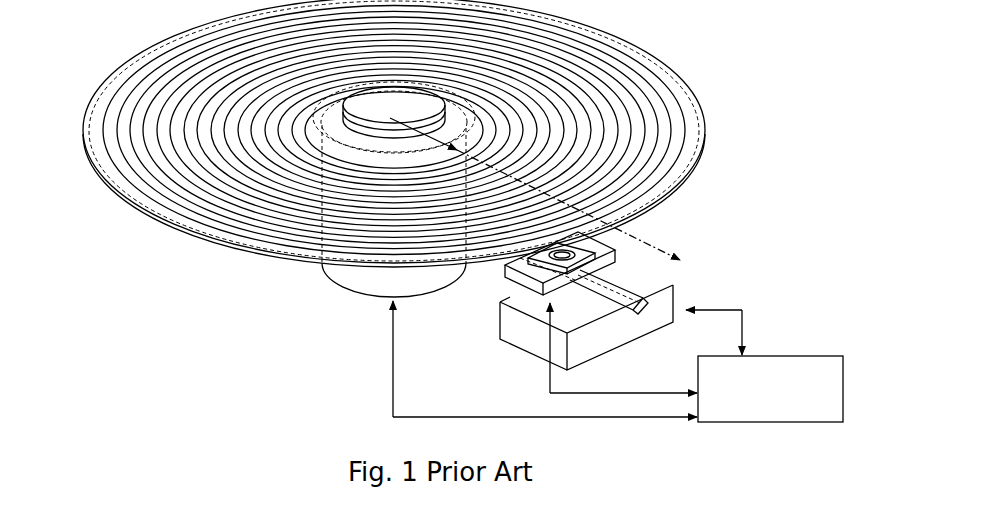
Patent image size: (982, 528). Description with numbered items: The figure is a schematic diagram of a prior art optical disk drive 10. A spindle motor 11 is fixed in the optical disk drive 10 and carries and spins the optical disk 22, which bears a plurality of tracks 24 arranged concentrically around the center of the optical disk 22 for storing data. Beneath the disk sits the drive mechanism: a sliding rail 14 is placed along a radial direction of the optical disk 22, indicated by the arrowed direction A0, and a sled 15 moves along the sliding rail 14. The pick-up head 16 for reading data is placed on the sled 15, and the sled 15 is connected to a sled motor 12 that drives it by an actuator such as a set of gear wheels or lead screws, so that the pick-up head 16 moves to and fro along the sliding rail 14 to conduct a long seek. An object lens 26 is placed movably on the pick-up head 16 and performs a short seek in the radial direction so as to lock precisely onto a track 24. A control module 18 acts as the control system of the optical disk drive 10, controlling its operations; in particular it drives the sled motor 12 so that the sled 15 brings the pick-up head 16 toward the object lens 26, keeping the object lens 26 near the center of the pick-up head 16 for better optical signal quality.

The optical disk drive 10 is at (778, 211).
The spindle motor 11 is at (333, 278).
The sled motor 12 is at (672, 302).
The sliding rail 14 is at (630, 306).
The sled 15 is at (610, 262).
The pick-up head 16 is at (590, 237).
The control module 18 is at (847, 363).
The optical disk 22 is at (97, 137).
The tracks 24 is at (147, 48).
The object lens 26 is at (469, 273).
The arrowed direction A0 is at (538, 189).